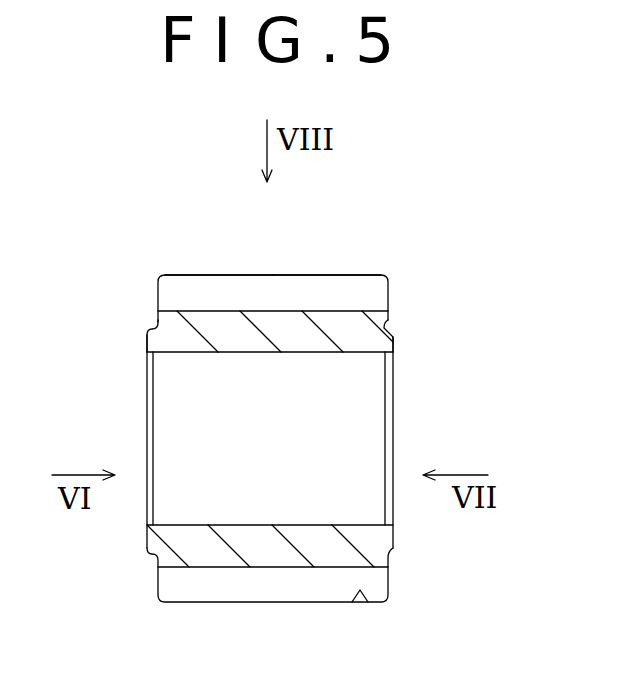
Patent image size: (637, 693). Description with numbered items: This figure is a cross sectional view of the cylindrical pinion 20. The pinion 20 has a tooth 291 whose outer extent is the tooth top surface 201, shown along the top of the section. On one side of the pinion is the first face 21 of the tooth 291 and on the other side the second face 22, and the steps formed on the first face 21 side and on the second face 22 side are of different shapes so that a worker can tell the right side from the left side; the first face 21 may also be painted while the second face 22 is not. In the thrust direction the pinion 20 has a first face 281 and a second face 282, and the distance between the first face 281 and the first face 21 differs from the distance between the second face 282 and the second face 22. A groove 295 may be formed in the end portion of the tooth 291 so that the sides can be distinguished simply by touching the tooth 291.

The pinion 20 is at (360, 254).
The first face 21 is at (158, 299).
The second face 22 is at (388, 292).
The tooth top surface 201 is at (210, 274).
The tooth 291 is at (282, 284).
The first face 281 is at (147, 337).
The second face 282 is at (393, 333).
The groove 295 is at (360, 603).